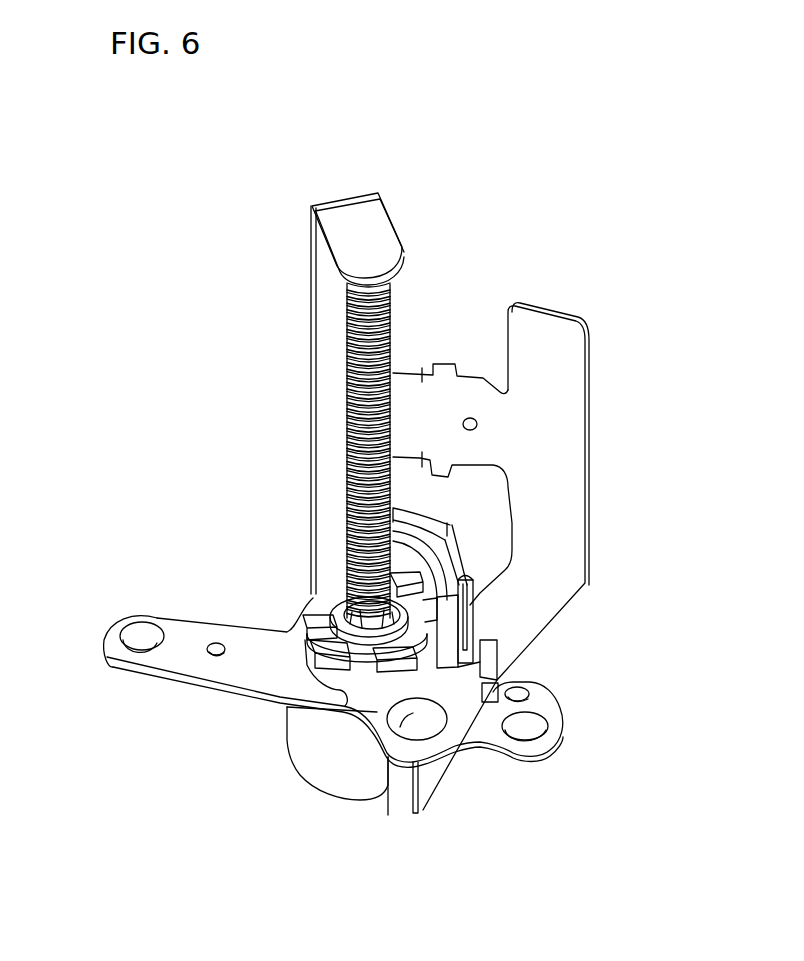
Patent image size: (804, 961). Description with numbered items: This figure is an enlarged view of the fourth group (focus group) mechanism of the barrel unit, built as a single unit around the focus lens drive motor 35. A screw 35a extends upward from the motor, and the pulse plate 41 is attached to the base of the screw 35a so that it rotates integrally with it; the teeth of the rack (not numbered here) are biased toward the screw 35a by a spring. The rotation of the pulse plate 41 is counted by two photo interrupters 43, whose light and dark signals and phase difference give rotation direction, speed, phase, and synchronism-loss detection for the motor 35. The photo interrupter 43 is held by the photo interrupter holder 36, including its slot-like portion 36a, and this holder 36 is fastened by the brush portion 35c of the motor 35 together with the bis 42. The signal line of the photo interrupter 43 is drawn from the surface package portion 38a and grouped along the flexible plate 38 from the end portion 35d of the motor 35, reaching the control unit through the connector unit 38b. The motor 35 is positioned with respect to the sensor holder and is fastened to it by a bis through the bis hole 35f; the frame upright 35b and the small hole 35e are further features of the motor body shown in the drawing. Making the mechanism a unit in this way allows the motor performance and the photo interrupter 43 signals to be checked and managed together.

The focus lens drive motor 35 is at (288, 735).
The screw 35a is at (347, 320).
The frame upright 35b is at (330, 437).
The brush portion 35c is at (188, 643).
The end portion 35d is at (427, 773).
The small hole 35e is at (212, 650).
The bis hole 35f is at (140, 640).
The photo interrupter holder 36 is at (500, 675).
The bracket slot portion 36a is at (445, 628).
The flexible plate 38 is at (562, 450).
The surface package portion 38a is at (463, 575).
The connector unit 38b is at (400, 378).
The pulse plate 41 is at (345, 595).
The bis 42 is at (400, 723).
The photo interrupter 43 is at (427, 608).